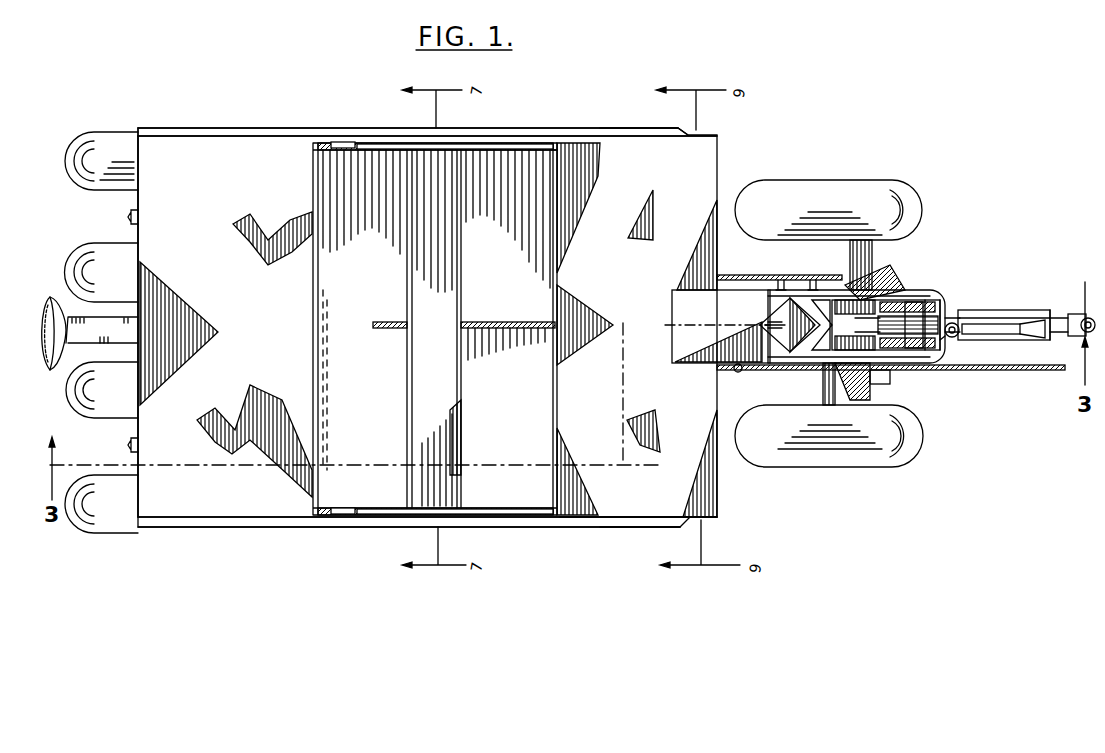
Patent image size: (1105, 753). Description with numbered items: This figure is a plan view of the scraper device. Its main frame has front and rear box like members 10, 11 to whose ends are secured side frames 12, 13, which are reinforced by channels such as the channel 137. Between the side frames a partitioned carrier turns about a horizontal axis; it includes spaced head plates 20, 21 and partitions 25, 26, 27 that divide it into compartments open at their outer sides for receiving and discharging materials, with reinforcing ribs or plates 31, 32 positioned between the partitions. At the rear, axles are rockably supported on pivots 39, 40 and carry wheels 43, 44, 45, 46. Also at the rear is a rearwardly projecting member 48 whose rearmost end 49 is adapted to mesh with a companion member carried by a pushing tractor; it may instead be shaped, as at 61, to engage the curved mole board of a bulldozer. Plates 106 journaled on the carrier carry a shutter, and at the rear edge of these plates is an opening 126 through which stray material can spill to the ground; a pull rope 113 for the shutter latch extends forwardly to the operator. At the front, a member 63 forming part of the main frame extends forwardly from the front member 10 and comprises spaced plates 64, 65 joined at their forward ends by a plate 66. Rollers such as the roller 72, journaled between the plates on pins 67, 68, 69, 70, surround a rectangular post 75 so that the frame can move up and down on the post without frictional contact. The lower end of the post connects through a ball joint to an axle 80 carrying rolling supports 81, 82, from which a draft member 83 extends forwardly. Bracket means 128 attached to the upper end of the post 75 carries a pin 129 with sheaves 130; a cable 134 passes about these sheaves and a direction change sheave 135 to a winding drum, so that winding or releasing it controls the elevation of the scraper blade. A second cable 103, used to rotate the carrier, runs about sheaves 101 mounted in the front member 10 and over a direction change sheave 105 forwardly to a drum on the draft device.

The front box like member 10 is at (618, 217).
The rear box like member 11 is at (262, 295).
The side frame 12 is at (634, 518).
The side frame 13 is at (612, 134).
The head plate 20 is at (509, 510).
The head plate 21 is at (522, 150).
The partition 25 is at (515, 411).
The partition 26 is at (441, 391).
The partition 27 is at (369, 391).
The reinforcing rib or plate 31 is at (505, 321).
The reinforcing rib or plate 32 is at (377, 321).
The pivot 39 is at (128, 443).
The pivot 40 is at (128, 216).
The wheel 43 is at (113, 478).
The wheel 44 is at (113, 374).
The wheel 45 is at (117, 256).
The wheel 46 is at (111, 146).
The rearwardly projecting member 48 is at (102, 330).
The rearmost end of projecting member 49 is at (54, 300).
The shaped portion 61 is at (45, 300).
The forwardly extending member 63 is at (748, 268).
The plate 64 is at (778, 364).
The plate 65 is at (926, 302).
The plate 66 is at (950, 348).
The pin 67 is at (781, 285).
The pin 68 is at (850, 262).
The pin 69 is at (812, 283).
The pin 70 is at (885, 290).
The roller 72 is at (820, 310).
The post 75 is at (787, 298).
The axle 80 is at (840, 381).
The rolling support 81 is at (908, 462).
The rolling support 82 is at (882, 198).
The hitch cylinder 83 is at (972, 310).
The sheaves 101 is at (866, 370).
The cable 103 is at (728, 372).
The direction change sheave 105 is at (892, 372).
The plate 106 is at (365, 143).
The pull rope 113 is at (728, 275).
The opening 126 is at (342, 141).
The bracket means 128 is at (938, 300).
The pin 129 is at (872, 320).
The sheaves 130 is at (921, 300).
The cable 134 is at (948, 316).
The direction change sheave 135 is at (995, 324).
The channel 137 is at (211, 131).